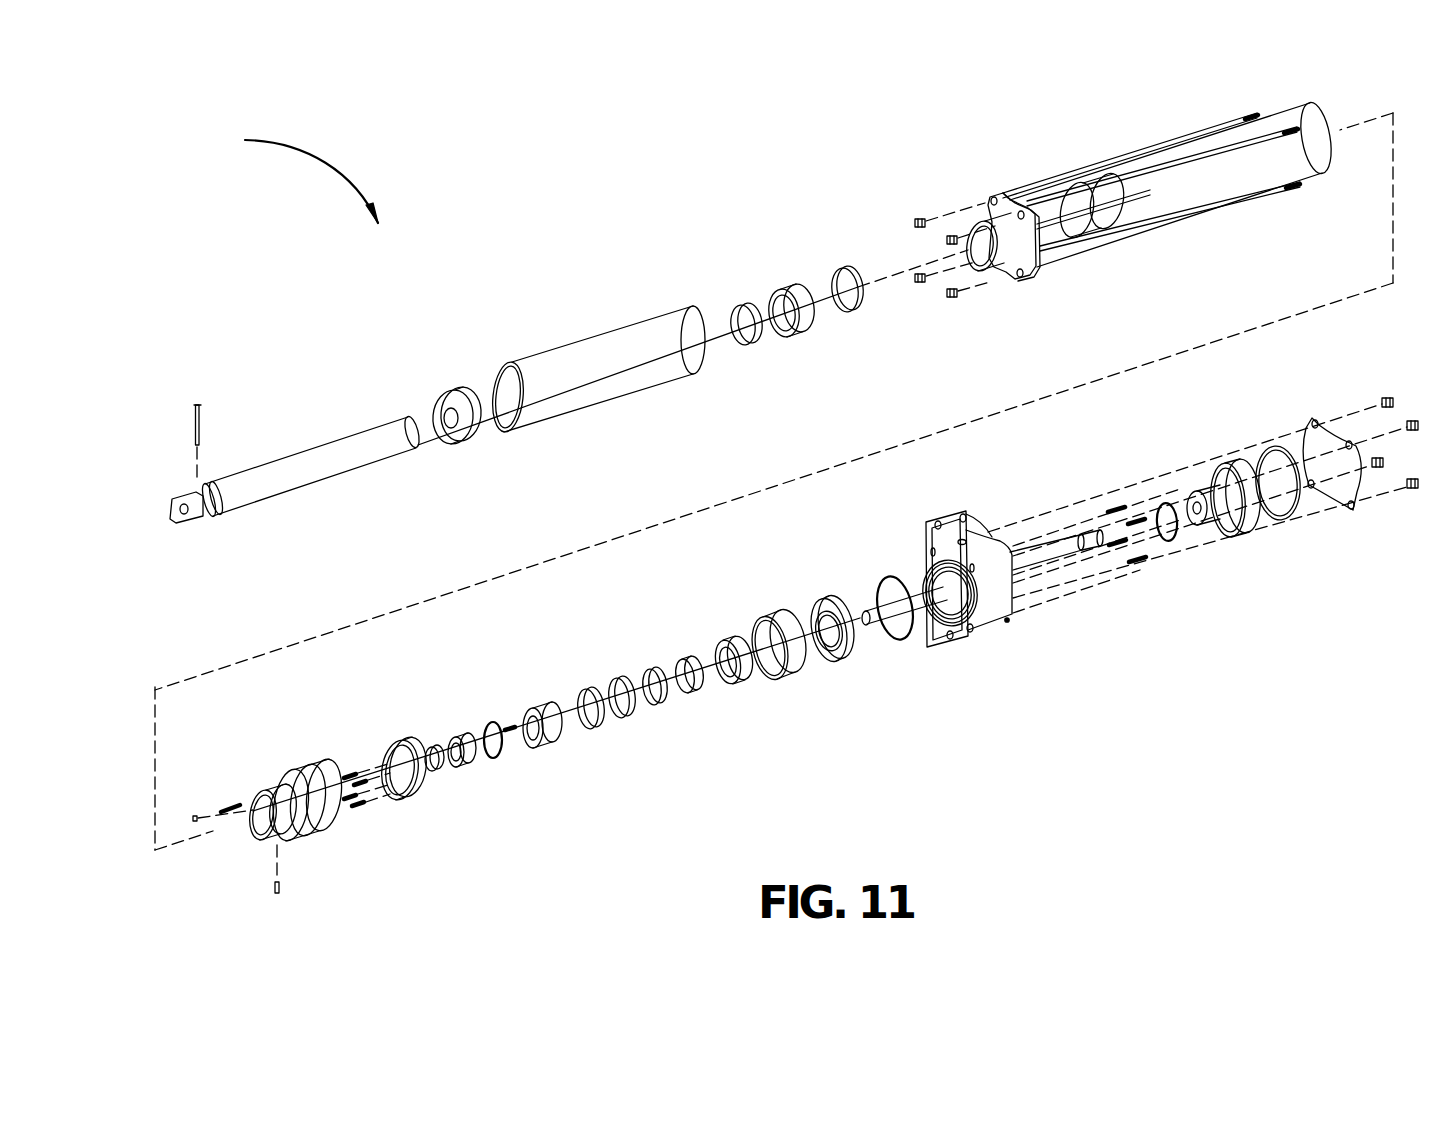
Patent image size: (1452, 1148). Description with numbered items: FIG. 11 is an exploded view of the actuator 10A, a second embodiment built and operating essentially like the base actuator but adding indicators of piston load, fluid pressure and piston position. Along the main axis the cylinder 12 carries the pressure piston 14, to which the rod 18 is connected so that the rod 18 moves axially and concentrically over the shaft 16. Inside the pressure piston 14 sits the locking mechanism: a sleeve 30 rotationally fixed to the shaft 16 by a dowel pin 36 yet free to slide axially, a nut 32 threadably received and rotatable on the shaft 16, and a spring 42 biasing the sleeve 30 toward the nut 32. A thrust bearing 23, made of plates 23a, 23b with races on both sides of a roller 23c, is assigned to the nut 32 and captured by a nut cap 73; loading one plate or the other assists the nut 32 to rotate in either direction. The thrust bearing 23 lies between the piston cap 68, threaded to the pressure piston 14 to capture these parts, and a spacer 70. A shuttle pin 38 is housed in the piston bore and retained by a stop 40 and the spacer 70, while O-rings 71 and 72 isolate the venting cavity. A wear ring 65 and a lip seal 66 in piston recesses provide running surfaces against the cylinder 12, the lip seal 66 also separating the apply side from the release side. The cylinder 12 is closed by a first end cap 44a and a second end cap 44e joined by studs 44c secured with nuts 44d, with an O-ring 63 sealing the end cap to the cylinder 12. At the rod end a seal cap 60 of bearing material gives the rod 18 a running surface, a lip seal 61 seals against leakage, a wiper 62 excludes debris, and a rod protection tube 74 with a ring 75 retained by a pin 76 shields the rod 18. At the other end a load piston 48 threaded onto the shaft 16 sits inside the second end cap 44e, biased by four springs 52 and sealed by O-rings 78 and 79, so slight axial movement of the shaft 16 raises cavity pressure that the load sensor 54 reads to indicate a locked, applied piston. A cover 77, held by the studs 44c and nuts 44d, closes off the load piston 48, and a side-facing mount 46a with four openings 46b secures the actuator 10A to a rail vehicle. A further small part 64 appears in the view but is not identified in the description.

The actuator 10A is at (290, 175).
The cylinder 12 is at (1318, 172).
The pressure piston 14 is at (302, 768).
The shaft 16 is at (1062, 566).
The rod 18 is at (290, 500).
The thrust bearing 23 is at (650, 706).
The plate 23a is at (583, 693).
The plate 23b is at (650, 673).
The roller 23c is at (618, 680).
The locking sleeve 30 is at (462, 737).
The locking nut 32 is at (545, 750).
The dowel pin 36 is at (510, 723).
The shuttle pin 38 is at (228, 800).
The stop 40 is at (195, 814).
The spring 42 is at (358, 810).
The first end cap 44a is at (990, 273).
The studs 44c is at (1230, 207).
The nuts 44d is at (920, 215).
The second end cap 44e is at (948, 647).
The side-facing mount 46a is at (940, 510).
The openings 46b is at (968, 512).
The load piston 48 is at (1225, 466).
The spring 52 is at (1118, 503).
The load sensor 54 is at (1007, 622).
The seal cap 60 is at (793, 288).
The lip seal 61 is at (847, 315).
The wiper 62 is at (738, 307).
The O-ring 63 is at (1080, 240).
The pin 64 is at (273, 887).
The wear ring 65 is at (787, 682).
The lip seal 66 is at (400, 743).
The piston cap 68 is at (827, 598).
The spacer 70 is at (733, 685).
The O-ring 71 is at (433, 771).
The O-ring 72 is at (495, 758).
The nut cap 73 is at (690, 694).
The rod protection tube 74 is at (597, 333).
The ring 75 is at (450, 400).
The pin 76 is at (196, 402).
The cover 77 is at (1316, 418).
The O-ring 78 is at (1277, 521).
The O-ring 79 is at (1170, 542).